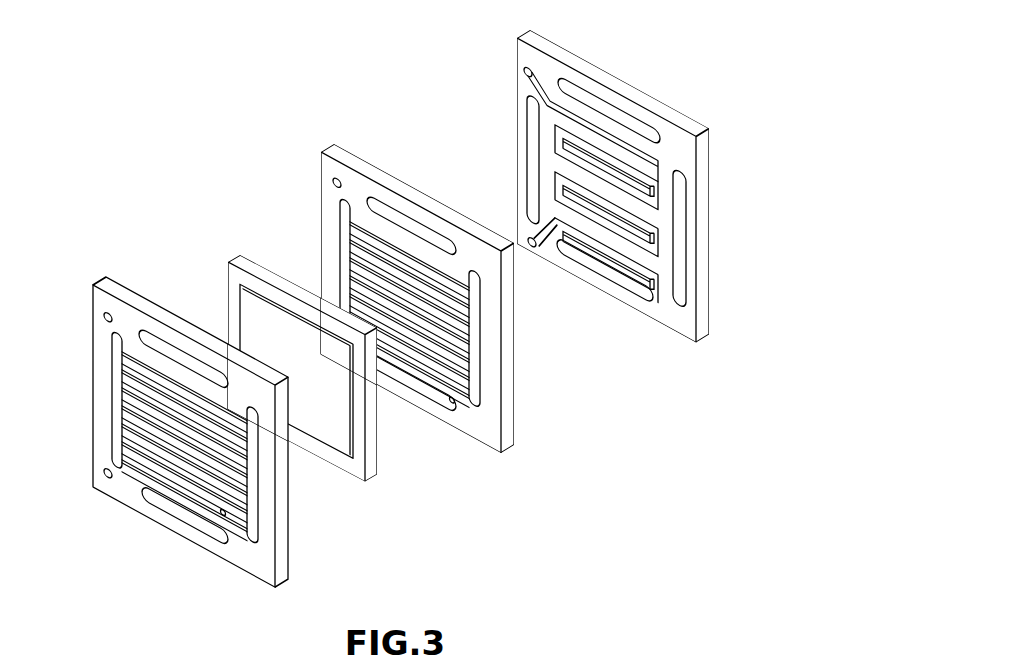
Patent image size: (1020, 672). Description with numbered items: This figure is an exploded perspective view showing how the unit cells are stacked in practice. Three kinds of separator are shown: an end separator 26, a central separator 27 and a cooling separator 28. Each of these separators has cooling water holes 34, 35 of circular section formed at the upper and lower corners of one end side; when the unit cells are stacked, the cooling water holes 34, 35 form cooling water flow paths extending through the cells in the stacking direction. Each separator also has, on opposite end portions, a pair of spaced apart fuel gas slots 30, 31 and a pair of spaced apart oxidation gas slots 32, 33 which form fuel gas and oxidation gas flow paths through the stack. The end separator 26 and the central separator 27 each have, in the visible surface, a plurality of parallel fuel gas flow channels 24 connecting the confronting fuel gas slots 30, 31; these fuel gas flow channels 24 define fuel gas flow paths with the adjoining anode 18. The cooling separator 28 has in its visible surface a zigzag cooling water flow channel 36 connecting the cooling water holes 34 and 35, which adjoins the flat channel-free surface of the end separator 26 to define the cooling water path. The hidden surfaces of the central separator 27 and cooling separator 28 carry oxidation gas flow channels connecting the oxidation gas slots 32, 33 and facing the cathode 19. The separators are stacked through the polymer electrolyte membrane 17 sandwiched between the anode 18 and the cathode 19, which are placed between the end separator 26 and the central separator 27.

The polymer electrolyte membrane 17 is at (367, 478).
The anode 18 is at (378, 424).
The cathode 19 is at (336, 430).
The fuel gas flow channels 24 is at (454, 408).
The end separator 26 is at (322, 150).
The central separator 27 is at (96, 283).
The cooling separator 28 is at (519, 37).
The fuel gas slot 30 is at (680, 252).
The fuel gas slot 31 is at (527, 157).
The oxidation gas slot 32 is at (603, 107).
The oxidation gas slot 33 is at (596, 272).
The cooling water hole 34 is at (522, 74).
The cooling water hole 35 is at (532, 246).
The cooling water flow channel 36 is at (657, 180).